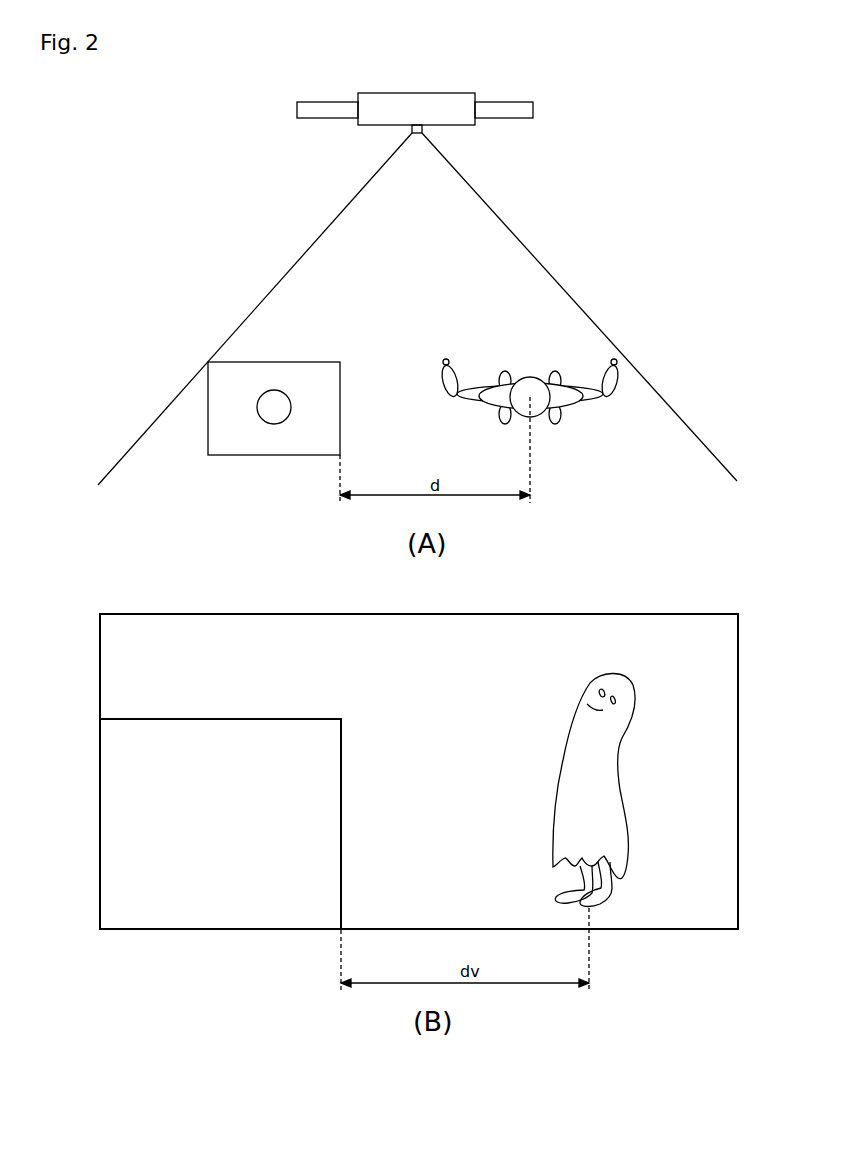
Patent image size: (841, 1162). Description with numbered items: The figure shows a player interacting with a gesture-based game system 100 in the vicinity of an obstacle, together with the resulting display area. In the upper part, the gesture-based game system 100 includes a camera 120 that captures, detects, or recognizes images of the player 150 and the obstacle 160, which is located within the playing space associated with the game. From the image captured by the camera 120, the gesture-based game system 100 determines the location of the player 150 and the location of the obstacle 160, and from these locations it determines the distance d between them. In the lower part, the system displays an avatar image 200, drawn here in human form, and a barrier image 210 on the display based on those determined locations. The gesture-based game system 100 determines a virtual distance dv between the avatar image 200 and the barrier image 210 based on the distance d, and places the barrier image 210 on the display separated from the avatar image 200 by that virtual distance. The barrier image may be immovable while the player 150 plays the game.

The gesture-based game system 100 is at (285, 83).
The camera 120 is at (443, 97).
The player 150 is at (540, 412).
The obstacle 160 is at (318, 362).
The avatar image 200 is at (620, 848).
The barrier image 210 is at (180, 898).